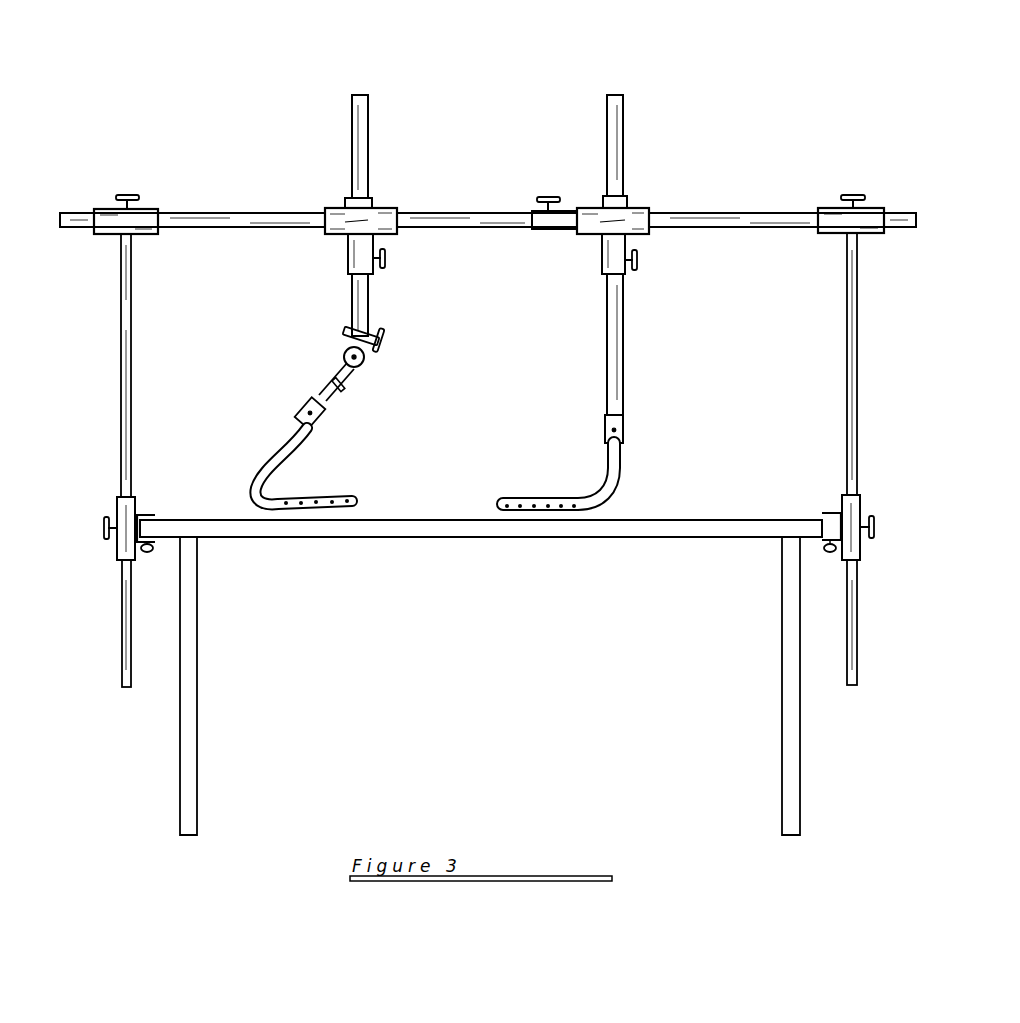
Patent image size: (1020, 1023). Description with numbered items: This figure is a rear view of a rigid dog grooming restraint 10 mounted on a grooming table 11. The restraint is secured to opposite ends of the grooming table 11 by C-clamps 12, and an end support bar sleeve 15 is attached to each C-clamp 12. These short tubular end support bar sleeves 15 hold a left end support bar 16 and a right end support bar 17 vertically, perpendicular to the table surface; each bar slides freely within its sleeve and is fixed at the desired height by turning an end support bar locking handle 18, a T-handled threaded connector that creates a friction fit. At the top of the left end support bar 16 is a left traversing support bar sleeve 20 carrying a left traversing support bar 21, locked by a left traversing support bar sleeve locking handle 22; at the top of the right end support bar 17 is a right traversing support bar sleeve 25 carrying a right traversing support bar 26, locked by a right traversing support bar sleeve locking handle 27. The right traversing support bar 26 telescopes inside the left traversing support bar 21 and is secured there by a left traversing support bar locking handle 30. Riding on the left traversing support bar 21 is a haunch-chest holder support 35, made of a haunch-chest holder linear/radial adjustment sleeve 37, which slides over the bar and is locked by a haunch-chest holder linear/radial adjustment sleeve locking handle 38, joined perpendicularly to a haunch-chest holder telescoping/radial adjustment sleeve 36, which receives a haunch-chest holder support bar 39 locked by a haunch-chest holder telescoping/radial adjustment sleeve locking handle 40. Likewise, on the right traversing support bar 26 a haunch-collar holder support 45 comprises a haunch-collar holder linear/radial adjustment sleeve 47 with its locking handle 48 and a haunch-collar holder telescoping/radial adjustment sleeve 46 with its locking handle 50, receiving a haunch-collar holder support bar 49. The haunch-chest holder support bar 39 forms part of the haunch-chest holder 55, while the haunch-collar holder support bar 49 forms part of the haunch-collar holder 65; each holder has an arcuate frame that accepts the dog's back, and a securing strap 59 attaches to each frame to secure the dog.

The rigid dog grooming restraint 10 is at (758, 78).
The grooming table 11 is at (713, 538).
The C-clamp 12 is at (148, 556).
The end support bar sleeve 15 is at (118, 496).
The left end support bar 16 is at (857, 360).
The right end support bar 17 is at (121, 352).
The end support bar locking handle 18 is at (104, 540).
The left traversing support bar sleeve 20 is at (868, 210).
The left traversing support bar 21 is at (768, 212).
The left traversing support bar sleeve locking handle 22 is at (846, 196).
The right traversing support bar sleeve 25 is at (99, 212).
The right traversing support bar 26 is at (251, 212).
The right traversing support bar sleeve locking handle 27 is at (126, 196).
The left traversing support bar locking handle 30 is at (547, 198).
The haunch-chest holder support 35 is at (602, 206).
The haunch-chest holder telescoping/radial adjustment sleeve 36 is at (604, 266).
The haunch-chest holder linear/radial adjustment sleeve 37 is at (641, 232).
The haunch-chest holder linear/radial adjustment sleeve locking handle 38 is at (618, 222).
The haunch-chest holder support bar 39 is at (623, 136).
The haunch-chest holder telescoping/radial adjustment sleeve locking handle 40 is at (640, 264).
The haunch-collar holder support 45 is at (345, 206).
The haunch-collar holder telescoping/radial adjustment sleeve 46 is at (348, 250).
The haunch-collar holder linear/radial adjustment sleeve 47 is at (386, 209).
The haunch-collar holder linear/radial adjustment sleeve locking handle 48 is at (340, 235).
The haunch-collar holder support bar 49 is at (369, 114).
The haunch-collar holder telescoping/radial adjustment sleeve locking handle 50 is at (385, 262).
The haunch-chest holder 55 is at (622, 420).
The securing strap 59 is at (331, 491).
The haunch-collar holder 65 is at (356, 380).